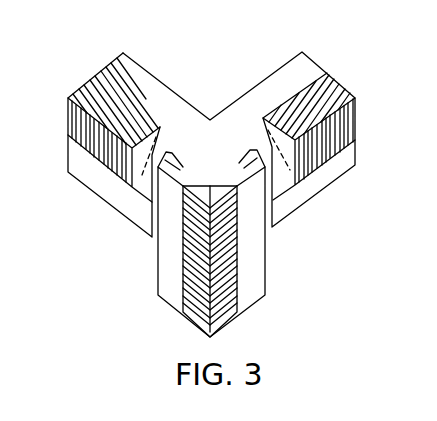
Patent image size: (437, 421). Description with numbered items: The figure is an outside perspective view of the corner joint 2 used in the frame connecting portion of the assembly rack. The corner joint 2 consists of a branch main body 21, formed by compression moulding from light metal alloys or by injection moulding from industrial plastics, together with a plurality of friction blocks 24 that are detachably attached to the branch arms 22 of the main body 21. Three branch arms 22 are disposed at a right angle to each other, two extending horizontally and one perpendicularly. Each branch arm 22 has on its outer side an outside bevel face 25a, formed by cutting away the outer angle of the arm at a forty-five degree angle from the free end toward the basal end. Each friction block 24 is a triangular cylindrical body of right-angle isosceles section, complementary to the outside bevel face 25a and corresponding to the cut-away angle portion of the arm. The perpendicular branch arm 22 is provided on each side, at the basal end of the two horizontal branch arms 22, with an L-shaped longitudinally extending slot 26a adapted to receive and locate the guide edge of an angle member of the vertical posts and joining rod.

The corner joint 2 is at (101, 230).
The branch main body 21 is at (228, 182).
The branch arm 22 is at (197, 182).
The friction block 24 is at (121, 97).
The outside bevel face 25a is at (238, 258).
The L-shaped longitudinally extending slot 26a is at (152, 197).